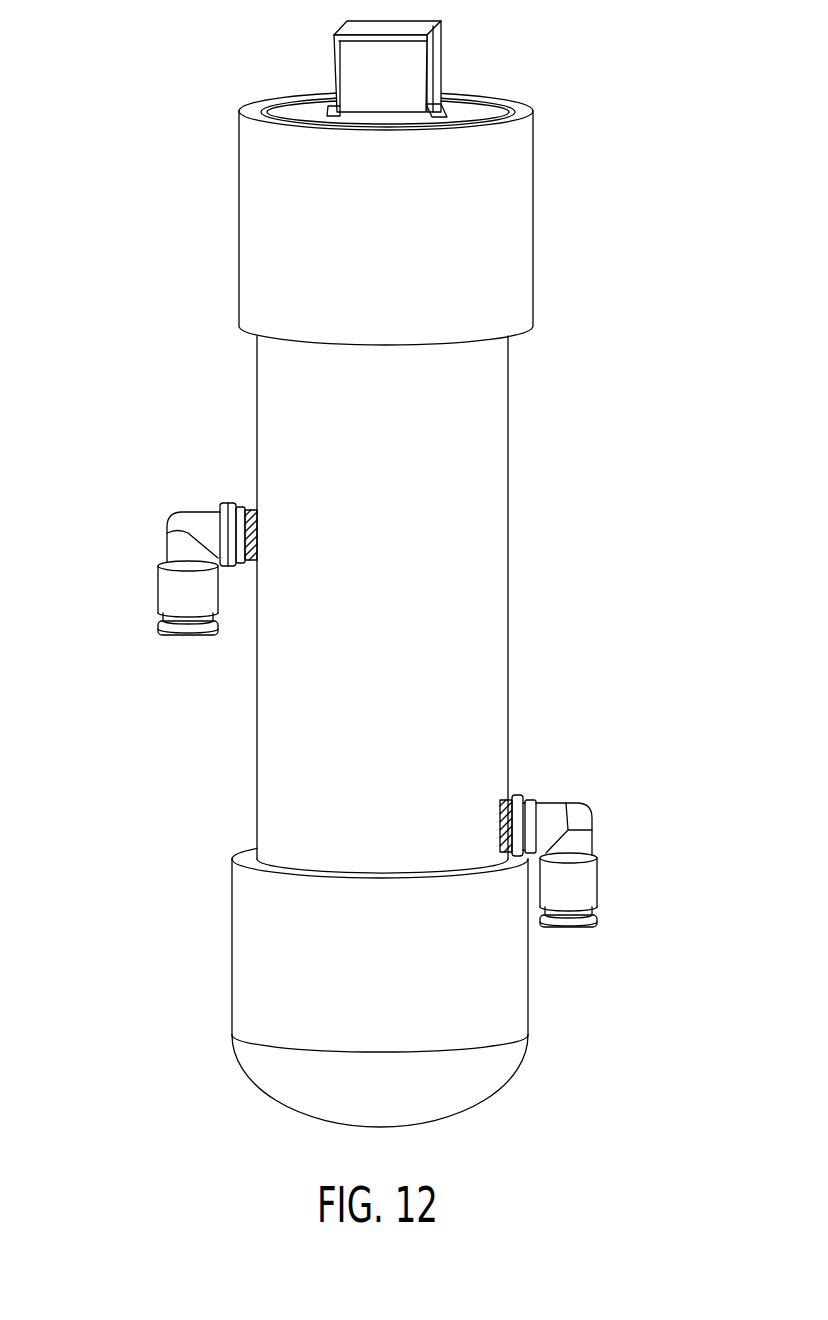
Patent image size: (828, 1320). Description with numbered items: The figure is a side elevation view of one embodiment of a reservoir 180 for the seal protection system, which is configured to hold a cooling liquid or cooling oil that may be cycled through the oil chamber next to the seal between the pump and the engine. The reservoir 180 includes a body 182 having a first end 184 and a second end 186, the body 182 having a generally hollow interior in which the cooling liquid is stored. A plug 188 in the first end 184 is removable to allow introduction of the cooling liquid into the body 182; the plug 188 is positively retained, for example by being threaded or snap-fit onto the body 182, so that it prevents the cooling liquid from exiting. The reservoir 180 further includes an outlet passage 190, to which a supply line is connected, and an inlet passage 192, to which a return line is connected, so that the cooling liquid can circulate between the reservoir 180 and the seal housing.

The reservoir 180 is at (379, 590).
The body 182 is at (483, 590).
The first end 184 is at (252, 108).
The second end 186 is at (308, 1115).
The plug 188 is at (464, 110).
The outlet passage 190 is at (597, 882).
The inlet passage 192 is at (158, 592).